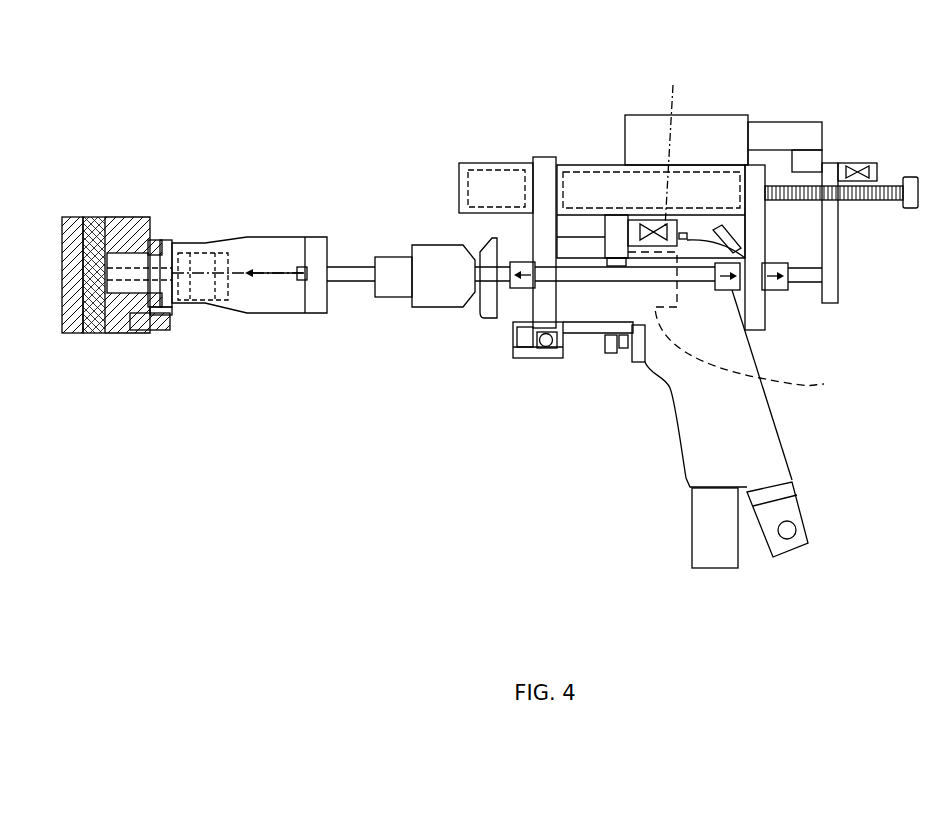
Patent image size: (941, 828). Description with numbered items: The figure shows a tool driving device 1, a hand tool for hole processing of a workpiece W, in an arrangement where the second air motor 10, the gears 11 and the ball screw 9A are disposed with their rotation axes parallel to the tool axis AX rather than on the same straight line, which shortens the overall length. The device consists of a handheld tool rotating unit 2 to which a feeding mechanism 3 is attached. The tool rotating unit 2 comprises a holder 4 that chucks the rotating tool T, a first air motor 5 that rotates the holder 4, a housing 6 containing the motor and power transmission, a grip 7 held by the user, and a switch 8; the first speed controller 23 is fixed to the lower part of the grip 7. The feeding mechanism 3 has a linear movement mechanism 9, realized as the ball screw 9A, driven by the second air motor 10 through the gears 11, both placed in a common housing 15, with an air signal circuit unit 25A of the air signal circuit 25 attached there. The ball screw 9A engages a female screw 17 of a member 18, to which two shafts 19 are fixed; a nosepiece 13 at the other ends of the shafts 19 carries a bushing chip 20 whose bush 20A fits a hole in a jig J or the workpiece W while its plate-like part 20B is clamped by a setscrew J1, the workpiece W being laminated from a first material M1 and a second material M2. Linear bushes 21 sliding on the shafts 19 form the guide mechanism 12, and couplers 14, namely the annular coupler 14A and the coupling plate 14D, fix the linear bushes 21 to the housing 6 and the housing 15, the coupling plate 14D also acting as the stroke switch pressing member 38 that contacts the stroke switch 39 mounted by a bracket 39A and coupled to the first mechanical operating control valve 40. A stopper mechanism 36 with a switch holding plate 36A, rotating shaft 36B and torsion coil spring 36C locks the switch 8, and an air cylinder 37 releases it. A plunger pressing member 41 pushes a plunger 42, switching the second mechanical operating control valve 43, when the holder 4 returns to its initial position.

The tool driving device 1 is at (304, 99).
The tool rotating unit 2 is at (702, 480).
The feeding mechanism 3 is at (517, 150).
The holder 4 is at (442, 245).
The first air motor 5 is at (735, 311).
The housing 6 is at (752, 330).
The grip 7 is at (668, 420).
The switch 8 is at (600, 325).
The linear movement mechanism 9 is at (844, 205).
The ball screw 9A is at (885, 187).
The second air motor 10 is at (458, 162).
The gears 11 is at (595, 168).
The guide mechanism 12 is at (395, 383).
The nosepiece 13 is at (290, 235).
The couplers 14 is at (683, 226).
The annular coupler 14A is at (545, 157).
The coupling plate 14D is at (760, 322).
The housing 15 is at (457, 177).
The female screw 17 is at (840, 218).
The member 18 is at (833, 282).
The shafts 19 is at (440, 310).
The bushing chip 20 is at (215, 163).
The bush 20A is at (112, 217).
The plate-like part 20B is at (153, 233).
The linear bushes 21 is at (493, 316).
The first speed controller 23 is at (767, 533).
The air signal circuit 25 is at (717, 120).
The air signal circuit unit 25A is at (722, 135).
The stopper mechanism 36 is at (633, 483).
The switch holding plate 36A is at (580, 347).
The rotating shaft 36B is at (540, 360).
The torsion coil spring 36C is at (557, 360).
The air cylinder 37 is at (520, 360).
The stroke switch pressing member 38 is at (755, 228).
The stroke switch 39 is at (683, 232).
The bracket 39A is at (617, 255).
The first mechanical operating control valve 40 is at (672, 143).
The plunger pressing member 41 is at (820, 145).
The plunger 42 is at (824, 158).
The second mechanical operating control valve 43 is at (868, 162).
The workpiece W is at (157, 391).
The first material M1 is at (75, 334).
The second material M2 is at (97, 334).
The jig J is at (166, 370).
The setscrew J1 is at (127, 335).
The rotating tool T is at (249, 272).
The tool axis AX is at (280, 280).